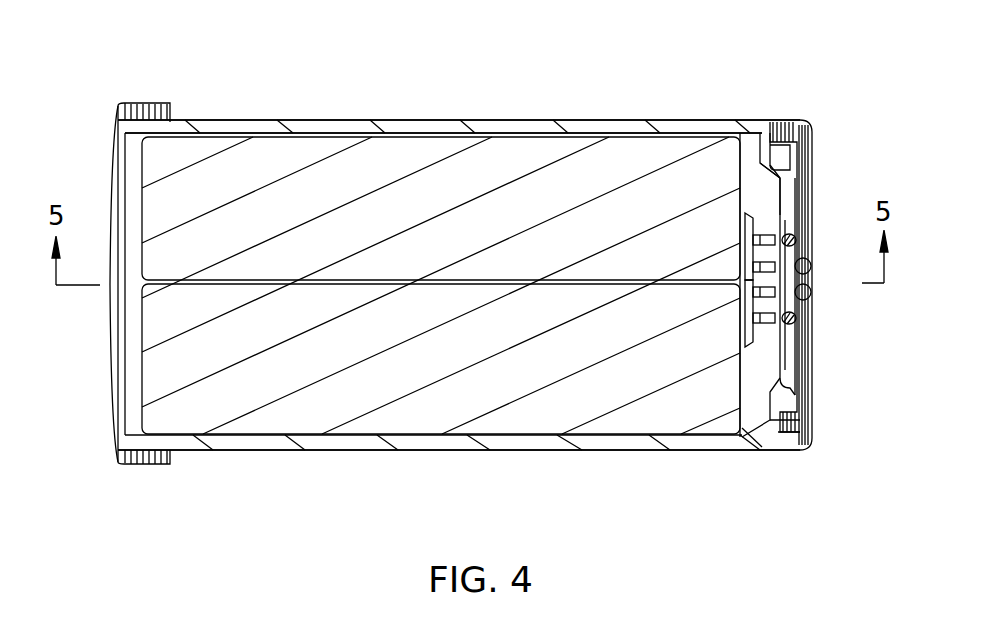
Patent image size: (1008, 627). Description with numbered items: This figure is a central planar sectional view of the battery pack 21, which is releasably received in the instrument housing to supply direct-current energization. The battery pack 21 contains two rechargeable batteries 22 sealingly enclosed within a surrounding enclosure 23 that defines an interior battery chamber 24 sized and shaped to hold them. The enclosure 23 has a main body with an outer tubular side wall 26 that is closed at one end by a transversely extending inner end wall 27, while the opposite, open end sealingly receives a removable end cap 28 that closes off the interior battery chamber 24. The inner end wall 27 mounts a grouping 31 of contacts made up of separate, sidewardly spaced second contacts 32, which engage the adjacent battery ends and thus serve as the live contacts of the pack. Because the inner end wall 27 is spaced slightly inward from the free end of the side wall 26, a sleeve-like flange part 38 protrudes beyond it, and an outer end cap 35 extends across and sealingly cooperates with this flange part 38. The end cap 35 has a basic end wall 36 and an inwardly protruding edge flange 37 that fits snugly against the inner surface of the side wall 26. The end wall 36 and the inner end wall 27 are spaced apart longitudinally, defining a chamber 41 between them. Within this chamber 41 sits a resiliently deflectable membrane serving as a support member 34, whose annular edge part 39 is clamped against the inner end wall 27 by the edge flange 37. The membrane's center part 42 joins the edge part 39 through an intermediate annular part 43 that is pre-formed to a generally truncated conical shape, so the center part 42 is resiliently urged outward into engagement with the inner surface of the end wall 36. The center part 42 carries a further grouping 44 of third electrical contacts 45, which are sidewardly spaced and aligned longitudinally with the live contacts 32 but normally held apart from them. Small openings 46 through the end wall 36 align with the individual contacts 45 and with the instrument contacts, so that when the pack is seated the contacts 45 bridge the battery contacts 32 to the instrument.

The battery pack 21 is at (597, 480).
The rechargeable batteries 22 is at (620, 158).
The enclosure 23 is at (355, 118).
The interior battery chamber 24 is at (530, 134).
The outer tubular side wall 26 is at (280, 445).
The inner end wall 27 is at (755, 360).
The removable end cap 28 is at (120, 385).
The grouping of contacts 31 is at (740, 262).
The second contacts 32 is at (748, 305).
The support member 34 is at (772, 190).
The outer end cap 35 is at (830, 283).
The end wall 36 is at (800, 210).
The edge flange 37 is at (785, 158).
The sleeve-like flange part 38 is at (789, 259).
The edge part 39 is at (775, 405).
The chamber 41 is at (765, 172).
The center part 42 is at (793, 343).
The intermediate annular part 43 is at (775, 383).
The further grouping of electrical contacts 44 is at (812, 292).
The third electrical contacts 45 is at (795, 238).
The openings 46 is at (810, 266).